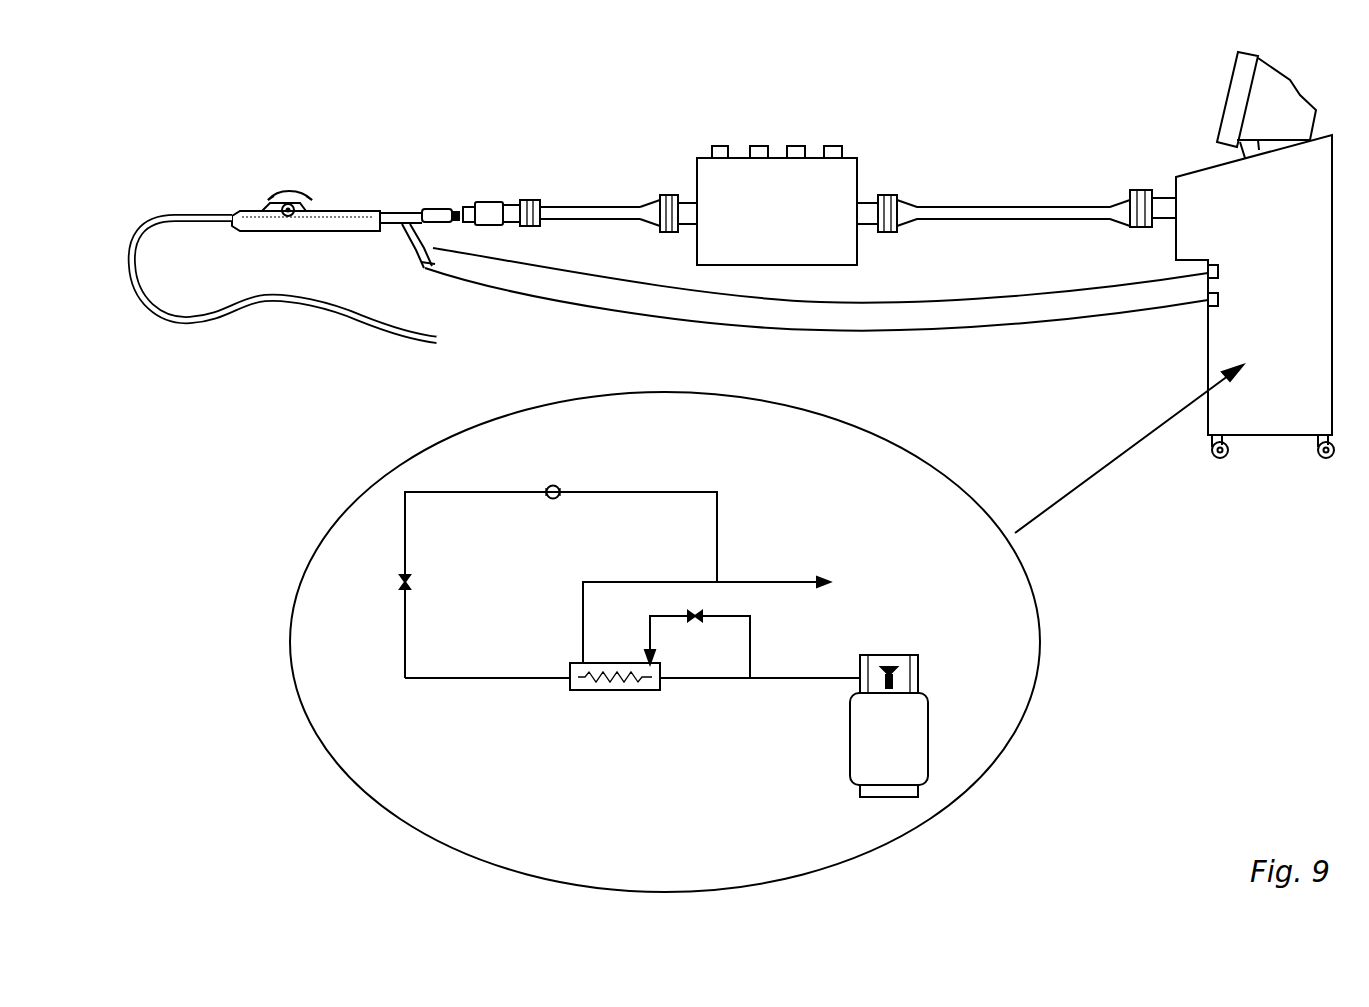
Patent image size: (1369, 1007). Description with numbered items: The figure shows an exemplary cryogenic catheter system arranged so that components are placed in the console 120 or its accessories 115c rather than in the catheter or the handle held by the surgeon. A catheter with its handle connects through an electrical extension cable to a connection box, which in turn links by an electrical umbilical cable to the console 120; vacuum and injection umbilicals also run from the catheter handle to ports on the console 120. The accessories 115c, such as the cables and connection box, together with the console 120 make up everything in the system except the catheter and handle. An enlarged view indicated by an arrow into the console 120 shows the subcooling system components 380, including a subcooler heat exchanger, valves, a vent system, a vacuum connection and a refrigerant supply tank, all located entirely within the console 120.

The accessories 115c is at (906, 123).
The console 120 is at (1210, 366).
The subcooling system components 380 is at (1043, 602).